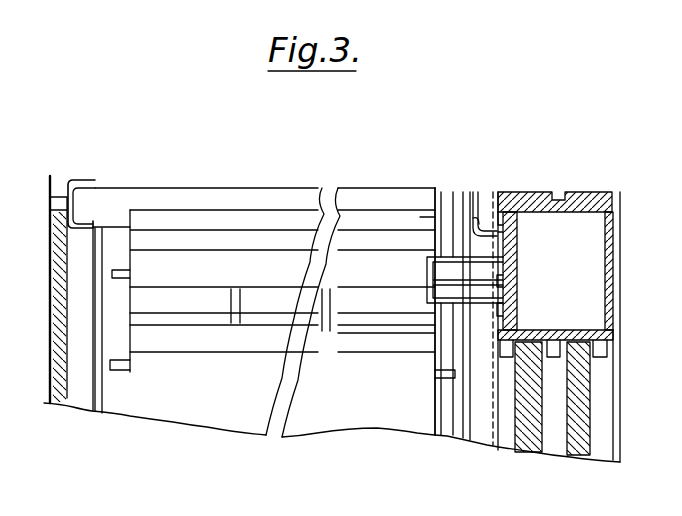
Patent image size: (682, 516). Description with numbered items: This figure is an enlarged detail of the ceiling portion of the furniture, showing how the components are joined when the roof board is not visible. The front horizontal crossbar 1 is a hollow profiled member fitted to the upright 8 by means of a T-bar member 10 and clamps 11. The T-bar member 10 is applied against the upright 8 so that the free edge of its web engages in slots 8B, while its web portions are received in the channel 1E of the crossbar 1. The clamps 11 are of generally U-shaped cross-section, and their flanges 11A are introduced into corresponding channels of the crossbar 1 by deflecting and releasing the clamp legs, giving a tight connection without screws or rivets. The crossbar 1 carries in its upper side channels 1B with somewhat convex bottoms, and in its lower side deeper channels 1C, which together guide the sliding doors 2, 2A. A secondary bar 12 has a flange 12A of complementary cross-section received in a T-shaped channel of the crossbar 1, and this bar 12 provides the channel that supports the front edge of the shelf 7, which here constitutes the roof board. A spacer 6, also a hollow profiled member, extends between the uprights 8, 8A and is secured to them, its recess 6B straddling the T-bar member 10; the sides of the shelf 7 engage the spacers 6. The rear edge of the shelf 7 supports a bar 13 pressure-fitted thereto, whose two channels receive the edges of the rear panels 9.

The horizontal crossbar 1 is at (600, 243).
The upper channel 1B is at (586, 193).
The lower channel 1C is at (608, 358).
The channel 1E is at (517, 285).
The sliding door 2 is at (532, 445).
The sliding door 2A is at (586, 445).
The spacer 6 is at (192, 325).
The recess 6B is at (425, 280).
The shelf 7 is at (124, 188).
The upright 8 is at (478, 428).
The upright 8A is at (83, 395).
The slot 8B is at (440, 372).
The rear panel 9 is at (52, 292).
The T-bar member 10 is at (450, 277).
The clamp 11 is at (436, 192).
The flange 11A is at (520, 304).
The secondary bar 12 is at (486, 203).
The flange 12A is at (510, 210).
The bar 13 is at (82, 180).